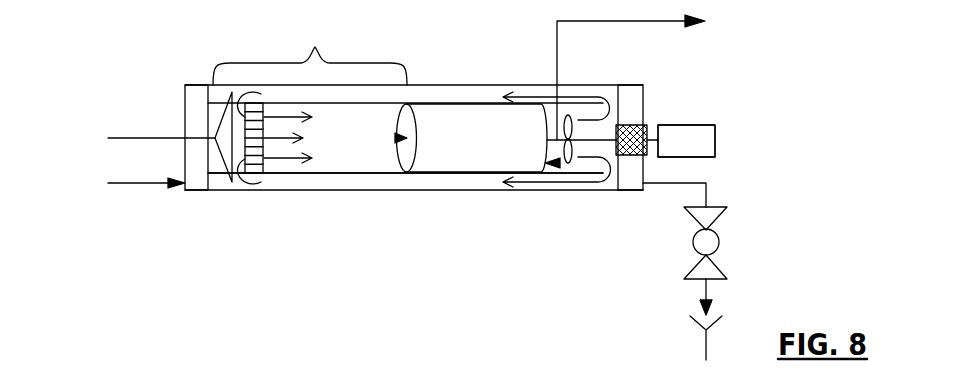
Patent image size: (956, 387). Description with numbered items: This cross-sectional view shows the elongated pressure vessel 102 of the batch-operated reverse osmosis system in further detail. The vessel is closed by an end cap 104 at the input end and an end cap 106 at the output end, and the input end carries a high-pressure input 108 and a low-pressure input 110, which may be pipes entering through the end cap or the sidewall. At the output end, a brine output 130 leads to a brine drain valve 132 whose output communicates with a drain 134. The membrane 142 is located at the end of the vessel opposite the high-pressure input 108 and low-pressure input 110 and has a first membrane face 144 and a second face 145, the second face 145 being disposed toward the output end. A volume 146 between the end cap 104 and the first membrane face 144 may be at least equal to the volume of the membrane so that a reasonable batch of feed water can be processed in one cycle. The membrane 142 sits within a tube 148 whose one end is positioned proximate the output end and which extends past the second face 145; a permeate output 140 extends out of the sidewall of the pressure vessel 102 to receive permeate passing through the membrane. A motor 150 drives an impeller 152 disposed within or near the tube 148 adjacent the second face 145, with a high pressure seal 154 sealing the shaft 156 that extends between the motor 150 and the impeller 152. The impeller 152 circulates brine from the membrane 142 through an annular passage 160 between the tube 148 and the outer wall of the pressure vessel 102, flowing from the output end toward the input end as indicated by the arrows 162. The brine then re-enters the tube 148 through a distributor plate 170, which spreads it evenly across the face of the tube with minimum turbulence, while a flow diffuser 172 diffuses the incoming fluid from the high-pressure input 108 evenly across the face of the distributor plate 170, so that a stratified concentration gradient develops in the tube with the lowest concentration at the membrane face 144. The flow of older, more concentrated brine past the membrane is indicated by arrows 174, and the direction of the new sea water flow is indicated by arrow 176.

The pressure vessel 102 is at (447, 85).
The end cap 104 is at (193, 85).
The end cap 106 is at (630, 86).
The high-pressure input 108 is at (122, 138).
The low-pressure input 110 is at (125, 184).
The brine output 130 is at (708, 196).
The brine drain valve 132 is at (694, 247).
The drain 134 is at (697, 323).
The permeate output 140 is at (557, 38).
The membrane 142 is at (477, 119).
The first membrane face 144 is at (396, 138).
The second face 145 is at (560, 165).
The volume 146 is at (310, 53).
The tube 148 is at (333, 175).
The motor 150 is at (716, 134).
The impeller 152 is at (575, 114).
The high pressure seal 154 is at (647, 124).
The shaft 156 is at (653, 139).
The annular passage 160 is at (450, 184).
The arrows 162 is at (533, 85).
The distributor plate 170 is at (255, 168).
The flow diffuser 172 is at (230, 149).
The arrows 174 is at (276, 97).
The arrow 176 is at (309, 138).